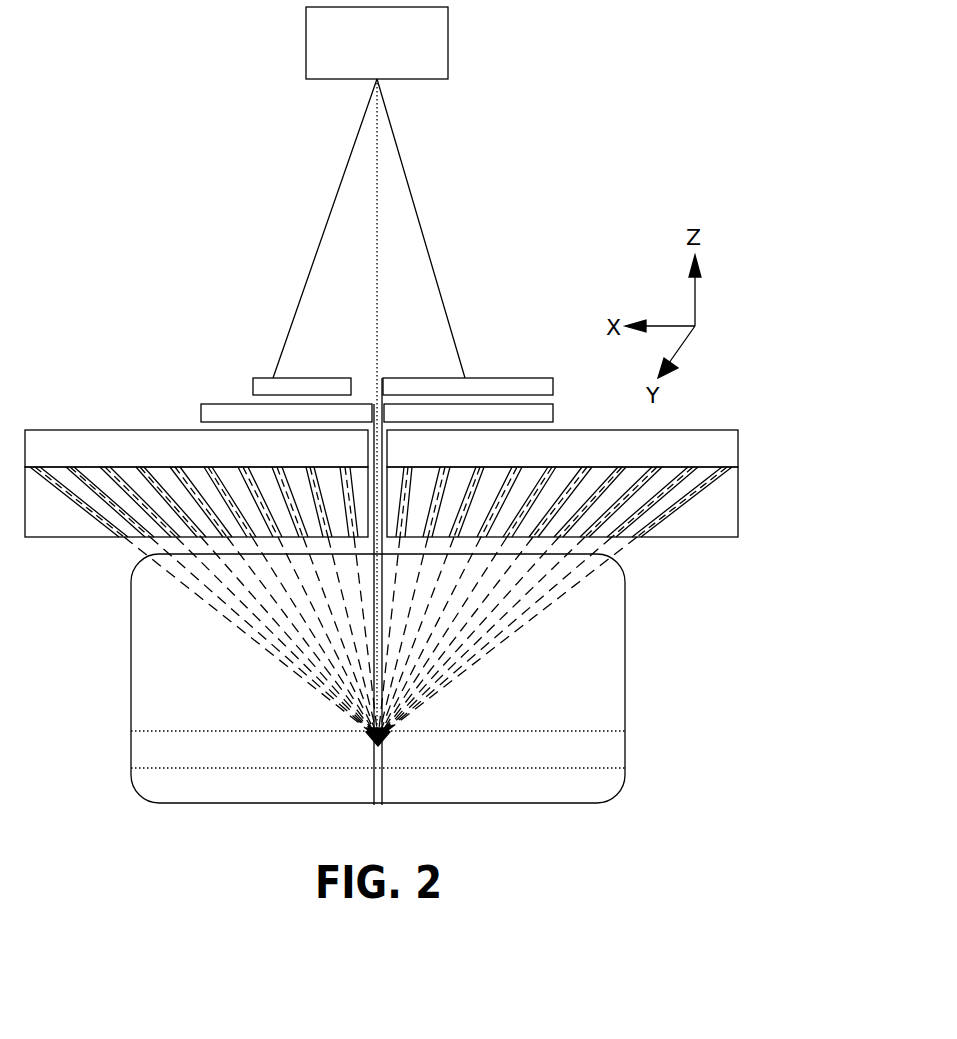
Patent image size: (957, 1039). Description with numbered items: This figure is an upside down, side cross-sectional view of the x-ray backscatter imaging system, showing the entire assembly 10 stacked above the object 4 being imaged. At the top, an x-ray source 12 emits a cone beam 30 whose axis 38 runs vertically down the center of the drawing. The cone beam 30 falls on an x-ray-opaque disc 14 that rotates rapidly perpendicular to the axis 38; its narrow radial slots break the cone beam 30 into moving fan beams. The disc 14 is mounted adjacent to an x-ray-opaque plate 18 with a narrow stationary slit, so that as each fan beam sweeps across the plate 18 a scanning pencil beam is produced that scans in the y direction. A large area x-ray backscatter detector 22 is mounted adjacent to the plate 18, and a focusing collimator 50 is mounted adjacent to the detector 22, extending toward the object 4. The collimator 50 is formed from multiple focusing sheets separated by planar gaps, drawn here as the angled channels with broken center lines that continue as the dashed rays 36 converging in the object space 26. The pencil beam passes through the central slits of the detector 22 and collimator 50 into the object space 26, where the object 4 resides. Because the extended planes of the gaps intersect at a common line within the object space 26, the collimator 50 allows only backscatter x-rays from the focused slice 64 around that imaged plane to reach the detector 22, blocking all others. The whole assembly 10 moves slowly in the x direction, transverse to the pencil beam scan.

The assembly 10 is at (197, 141).
The x-ray source 12 is at (448, 50).
The cone beam 30 is at (427, 242).
The cone beam axis 38 is at (378, 288).
The x-ray-opaque disc 14 is at (553, 386).
The x-ray-opaque plate 18 is at (553, 413).
The x-ray backscatter detector 22 is at (738, 455).
The focusing collimator 50 is at (738, 508).
The converging rays 36 is at (475, 668).
The object 4 is at (625, 632).
The focused slice 64 is at (625, 752).
The object space 26 is at (108, 657).